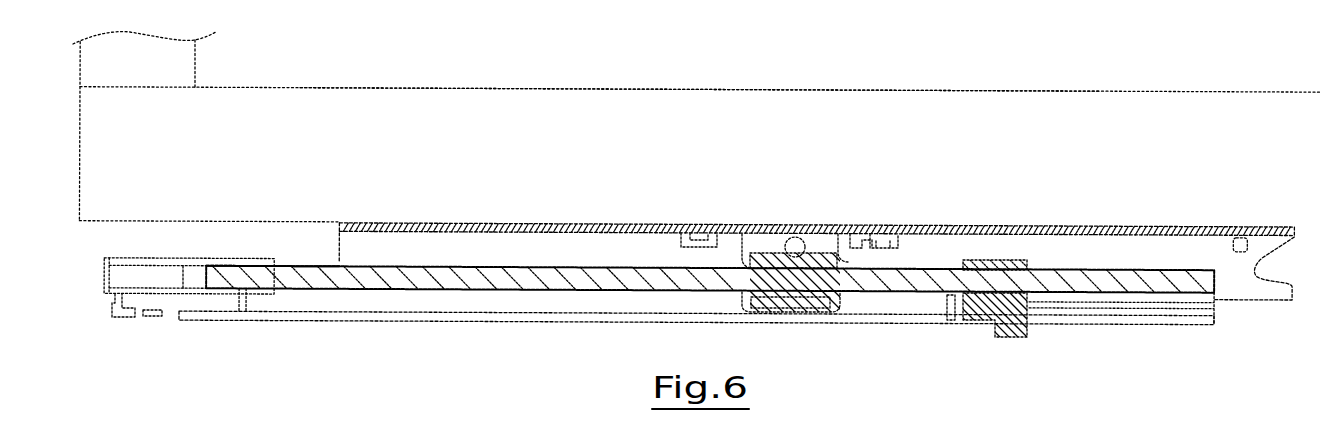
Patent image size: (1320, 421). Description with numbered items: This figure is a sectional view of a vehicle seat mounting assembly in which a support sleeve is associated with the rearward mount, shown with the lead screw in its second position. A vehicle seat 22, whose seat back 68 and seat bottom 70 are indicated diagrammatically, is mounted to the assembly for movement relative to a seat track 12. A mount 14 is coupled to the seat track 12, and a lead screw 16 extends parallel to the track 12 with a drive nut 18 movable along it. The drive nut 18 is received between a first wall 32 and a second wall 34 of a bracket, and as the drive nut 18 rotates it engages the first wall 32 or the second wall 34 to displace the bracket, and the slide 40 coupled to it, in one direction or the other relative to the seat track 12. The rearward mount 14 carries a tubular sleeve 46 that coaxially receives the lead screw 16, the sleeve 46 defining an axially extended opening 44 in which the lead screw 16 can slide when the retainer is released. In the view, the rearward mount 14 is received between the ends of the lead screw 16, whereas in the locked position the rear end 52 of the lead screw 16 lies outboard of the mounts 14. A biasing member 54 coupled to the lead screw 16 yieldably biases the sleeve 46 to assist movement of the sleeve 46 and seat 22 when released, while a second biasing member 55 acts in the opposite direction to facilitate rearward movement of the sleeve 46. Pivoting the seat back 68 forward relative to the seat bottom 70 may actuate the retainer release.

The seat track 12 is at (541, 303).
The mount 14 is at (133, 318).
The lead screw 16 is at (653, 275).
The drive nut 18 is at (770, 260).
The vehicle seat 22 is at (1133, 89).
The first wall 32 is at (829, 250).
The second wall 34 is at (759, 256).
The slide 40 is at (1014, 240).
The opening 44 is at (140, 265).
The tubular sleeve 46 is at (162, 258).
The rear end 52 is at (207, 275).
The biasing member 54 is at (316, 259).
The second biasing member 55 is at (903, 268).
The seat back 68 is at (295, 105).
The seat bottom 70 is at (185, 54).